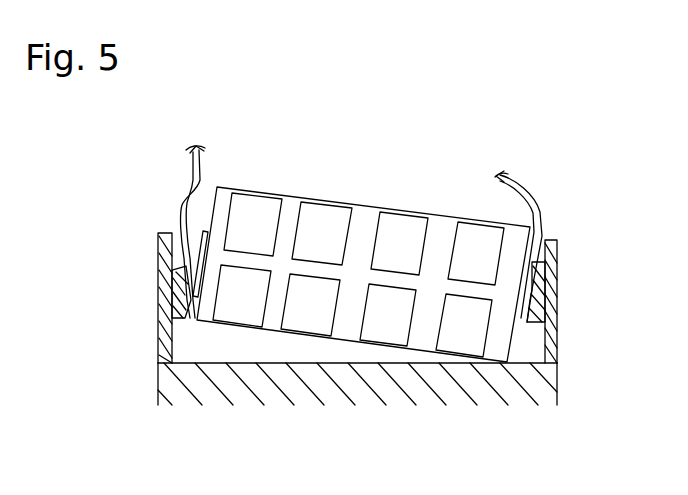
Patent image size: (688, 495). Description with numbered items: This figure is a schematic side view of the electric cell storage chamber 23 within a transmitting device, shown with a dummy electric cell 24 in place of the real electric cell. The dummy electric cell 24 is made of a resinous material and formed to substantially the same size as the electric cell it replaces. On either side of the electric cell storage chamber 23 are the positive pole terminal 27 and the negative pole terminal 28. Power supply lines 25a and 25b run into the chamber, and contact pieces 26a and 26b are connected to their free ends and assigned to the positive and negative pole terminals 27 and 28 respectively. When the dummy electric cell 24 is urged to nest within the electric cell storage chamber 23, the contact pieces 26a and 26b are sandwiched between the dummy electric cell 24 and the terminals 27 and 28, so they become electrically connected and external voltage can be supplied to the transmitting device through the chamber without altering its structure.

The electric cell storage chamber 23 is at (243, 363).
The dummy electric cell 24 is at (401, 241).
The power supply line 25a is at (190, 188).
The power supply line 25b is at (521, 204).
The contact piece 26a is at (182, 286).
The contact piece 26b is at (545, 285).
The positive pole terminal 27 is at (172, 329).
The negative pole terminal 28 is at (545, 312).